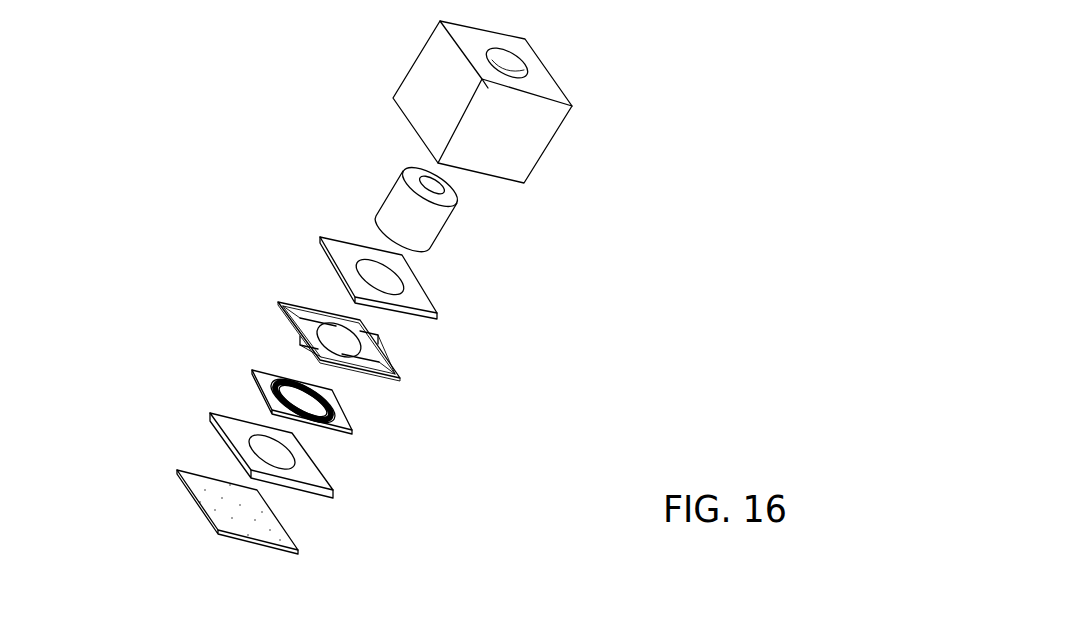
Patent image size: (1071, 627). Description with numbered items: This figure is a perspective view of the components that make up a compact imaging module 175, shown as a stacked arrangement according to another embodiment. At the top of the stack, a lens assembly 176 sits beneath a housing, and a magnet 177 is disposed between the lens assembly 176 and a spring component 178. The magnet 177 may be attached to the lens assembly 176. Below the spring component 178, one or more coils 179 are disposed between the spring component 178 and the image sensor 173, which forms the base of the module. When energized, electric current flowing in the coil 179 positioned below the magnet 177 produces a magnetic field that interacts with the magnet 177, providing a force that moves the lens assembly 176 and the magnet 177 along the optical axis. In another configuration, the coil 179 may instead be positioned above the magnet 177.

The image sensor 173 is at (213, 479).
The compact imaging module 175 is at (400, 287).
The lens assembly 176 is at (397, 183).
The magnet 177 is at (316, 245).
The spring component 178 is at (396, 366).
The coil 179 is at (258, 371).